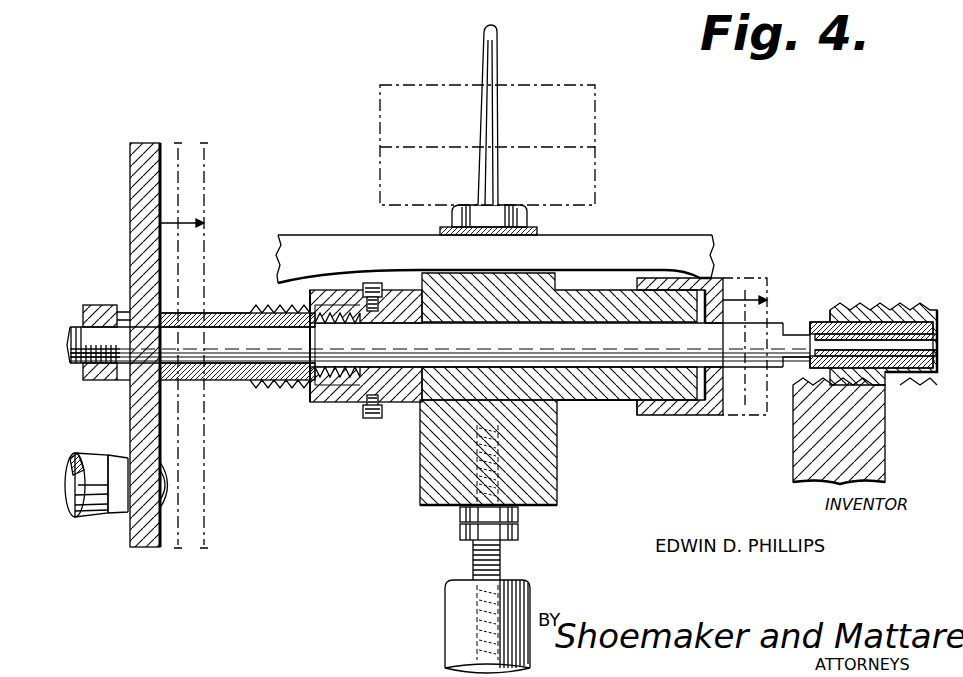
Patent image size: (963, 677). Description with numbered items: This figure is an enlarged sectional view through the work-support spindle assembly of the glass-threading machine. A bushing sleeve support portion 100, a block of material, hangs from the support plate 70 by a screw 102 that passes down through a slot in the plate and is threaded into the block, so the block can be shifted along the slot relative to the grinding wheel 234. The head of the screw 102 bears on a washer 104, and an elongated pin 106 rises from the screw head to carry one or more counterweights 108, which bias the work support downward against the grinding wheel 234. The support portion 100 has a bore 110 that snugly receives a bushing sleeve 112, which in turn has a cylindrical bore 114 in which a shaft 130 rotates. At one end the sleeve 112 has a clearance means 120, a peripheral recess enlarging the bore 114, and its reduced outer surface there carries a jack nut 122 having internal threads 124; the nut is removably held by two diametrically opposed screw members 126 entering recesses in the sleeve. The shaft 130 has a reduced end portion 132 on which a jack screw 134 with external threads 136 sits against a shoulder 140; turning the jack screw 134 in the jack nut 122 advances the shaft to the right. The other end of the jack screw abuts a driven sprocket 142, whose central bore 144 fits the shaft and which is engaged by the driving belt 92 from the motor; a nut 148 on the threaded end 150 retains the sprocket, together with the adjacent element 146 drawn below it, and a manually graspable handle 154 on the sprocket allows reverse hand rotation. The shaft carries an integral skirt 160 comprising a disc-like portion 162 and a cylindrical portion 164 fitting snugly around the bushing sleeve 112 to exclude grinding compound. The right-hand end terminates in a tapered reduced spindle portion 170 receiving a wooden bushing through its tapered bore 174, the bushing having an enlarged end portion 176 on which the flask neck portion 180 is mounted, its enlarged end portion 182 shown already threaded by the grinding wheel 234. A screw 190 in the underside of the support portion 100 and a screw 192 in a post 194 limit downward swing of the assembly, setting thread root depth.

The support plate 70 is at (690, 245).
The driving belt 92 is at (148, 143).
The bushing sleeve support portion 100 is at (412, 466).
The screw 102 is at (538, 210).
The washer 104 is at (540, 236).
The elongated pin 106 is at (498, 70).
The counterweights 108 is at (595, 120).
The bore 110 is at (565, 402).
The bushing sleeve 112 is at (603, 402).
The cylindrical bore 114 is at (560, 323).
The clearance means 120 is at (397, 324).
The jack nut 122 is at (322, 406).
The internal threads 124 is at (335, 314).
The screw members 126 is at (372, 283).
The shaft 130 is at (729, 345).
The reduced end portion 132 is at (222, 382).
The jack screw 134 is at (220, 313).
The external threads 136 is at (275, 386).
The shoulder 140 is at (310, 338).
The driven sprocket 142 is at (142, 258).
The central bore 144 is at (152, 332).
The lower nut 146 is at (118, 382).
The nut 148 is at (105, 305).
The threaded end 150 is at (80, 366).
The manually graspable handle 154 is at (90, 520).
The skirt 160 is at (702, 425).
The disc-like portion 162 is at (740, 416).
The cylindrical portion 164 is at (655, 418).
The reduced spindle portion 170 is at (795, 334).
The tapered bore 174 is at (900, 340).
The enlarged end portion 176 is at (835, 300).
The neck portion 180 is at (912, 375).
The enlarged end portion 182 is at (822, 320).
The screw 190 is at (460, 515).
The screw 192 is at (462, 533).
The post 194 is at (450, 632).
The grinding wheel 234 is at (872, 432).